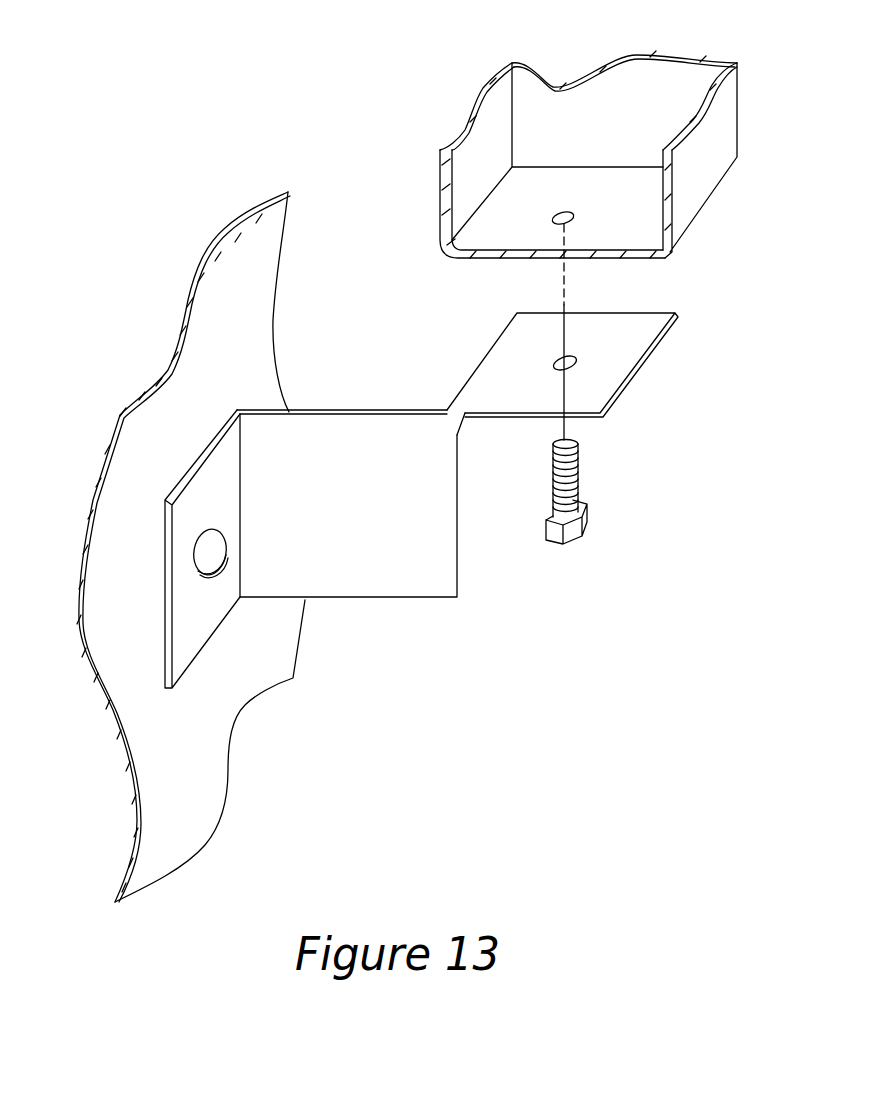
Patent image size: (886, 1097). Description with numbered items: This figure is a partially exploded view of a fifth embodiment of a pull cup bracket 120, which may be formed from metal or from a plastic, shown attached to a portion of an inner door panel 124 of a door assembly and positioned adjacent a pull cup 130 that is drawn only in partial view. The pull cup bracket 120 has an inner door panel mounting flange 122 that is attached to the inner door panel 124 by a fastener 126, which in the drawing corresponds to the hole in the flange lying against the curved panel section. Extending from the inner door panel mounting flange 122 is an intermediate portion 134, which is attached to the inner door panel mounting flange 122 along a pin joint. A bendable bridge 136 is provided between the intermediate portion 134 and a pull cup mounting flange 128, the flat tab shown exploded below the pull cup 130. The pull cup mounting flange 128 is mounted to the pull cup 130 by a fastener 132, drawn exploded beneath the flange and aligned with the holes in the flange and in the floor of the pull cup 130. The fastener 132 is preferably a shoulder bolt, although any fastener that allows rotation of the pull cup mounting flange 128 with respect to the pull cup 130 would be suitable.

The pull cup bracket 120 is at (292, 549).
The inner door panel mounting flange 122 is at (127, 583).
The inner door panel 124 is at (255, 336).
The fastener 126 is at (195, 548).
The pull cup mounting flange 128 is at (633, 343).
The pull cup 130 is at (690, 210).
The fastener 132 is at (570, 543).
The intermediate portion 134 is at (447, 572).
The bendable bridge 136 is at (452, 410).